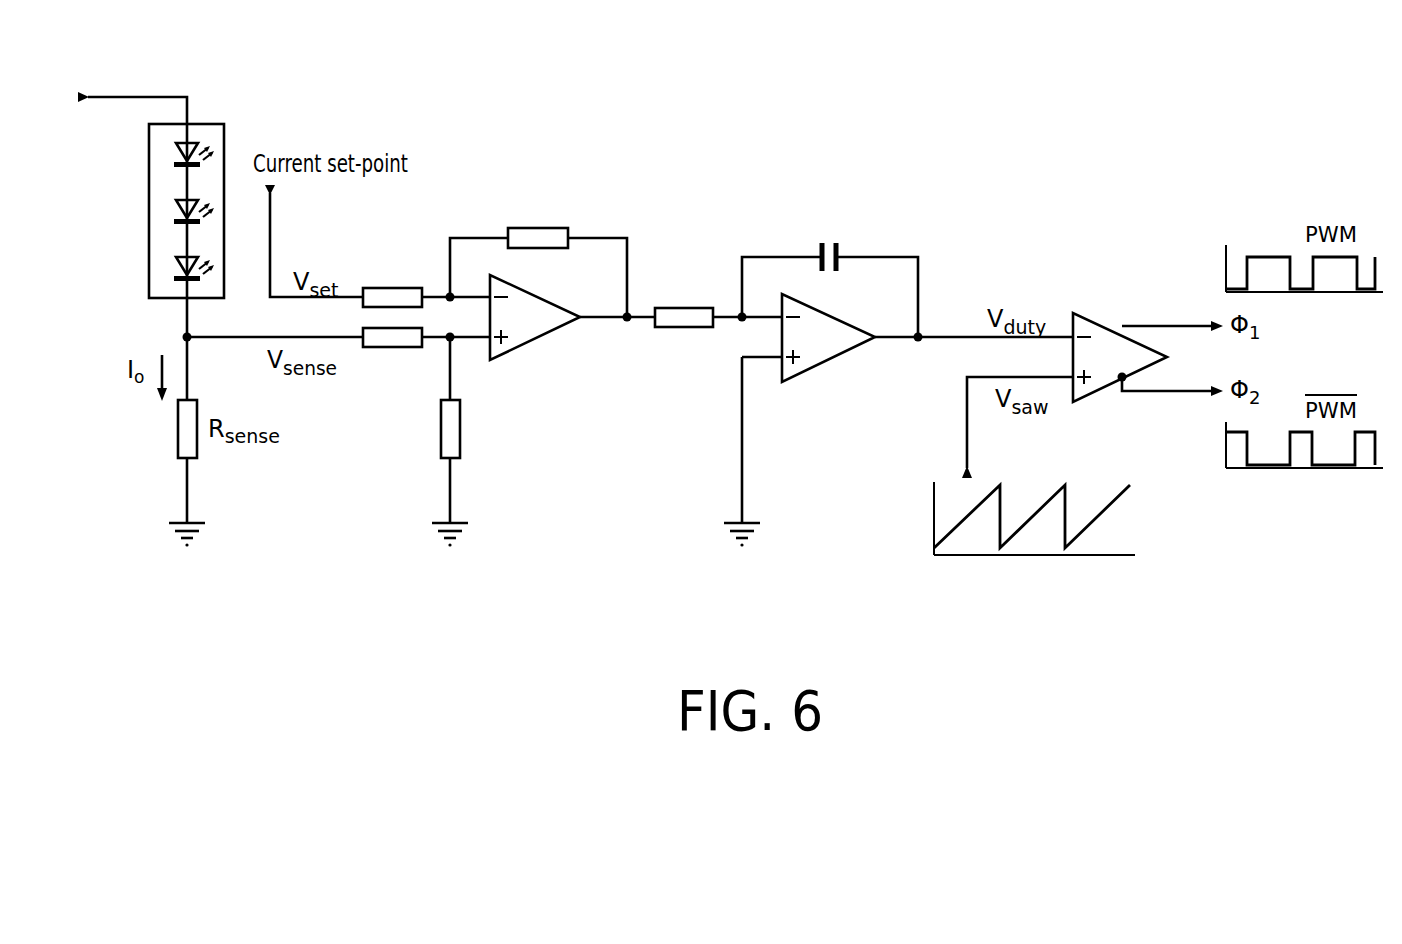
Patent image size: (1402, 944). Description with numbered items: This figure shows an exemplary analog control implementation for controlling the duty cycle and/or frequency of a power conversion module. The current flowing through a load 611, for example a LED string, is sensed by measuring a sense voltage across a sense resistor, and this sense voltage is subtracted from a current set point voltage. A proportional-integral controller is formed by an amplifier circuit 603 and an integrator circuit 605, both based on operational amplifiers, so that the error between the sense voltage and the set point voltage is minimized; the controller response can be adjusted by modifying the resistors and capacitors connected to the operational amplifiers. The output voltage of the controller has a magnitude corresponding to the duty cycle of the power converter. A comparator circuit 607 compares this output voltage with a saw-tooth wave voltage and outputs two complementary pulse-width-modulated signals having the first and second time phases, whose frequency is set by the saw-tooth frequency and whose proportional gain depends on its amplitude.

The amplifier circuit 603 is at (535, 339).
The integrator circuit 605 is at (828, 360).
The comparator circuit 607 is at (1108, 329).
The load 611 is at (208, 124).